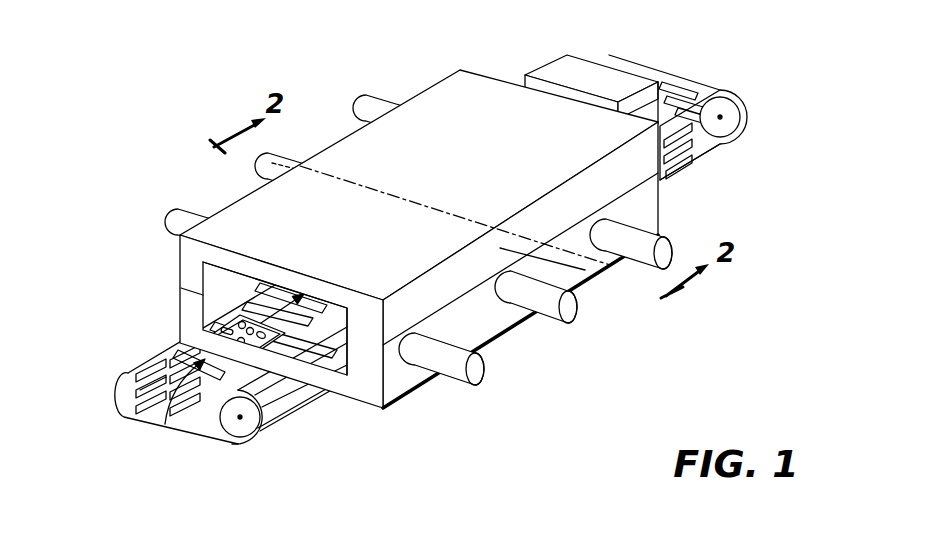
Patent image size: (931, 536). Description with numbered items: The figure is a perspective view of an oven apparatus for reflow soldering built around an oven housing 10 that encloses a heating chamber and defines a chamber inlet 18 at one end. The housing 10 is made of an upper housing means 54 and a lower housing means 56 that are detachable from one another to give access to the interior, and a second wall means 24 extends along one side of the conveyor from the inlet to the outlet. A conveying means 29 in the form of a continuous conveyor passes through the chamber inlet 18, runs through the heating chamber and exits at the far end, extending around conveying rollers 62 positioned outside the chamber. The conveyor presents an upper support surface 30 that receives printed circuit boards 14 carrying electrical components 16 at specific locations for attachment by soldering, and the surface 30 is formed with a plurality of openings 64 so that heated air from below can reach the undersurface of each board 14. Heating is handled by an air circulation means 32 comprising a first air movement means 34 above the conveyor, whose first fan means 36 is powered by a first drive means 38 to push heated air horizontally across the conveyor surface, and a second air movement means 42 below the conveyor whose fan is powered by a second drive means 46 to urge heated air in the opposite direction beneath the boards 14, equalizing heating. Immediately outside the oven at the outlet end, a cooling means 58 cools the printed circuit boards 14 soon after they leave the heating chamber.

The oven housing 10 is at (444, 173).
The printed circuit board 14 is at (253, 349).
The electrical components 16 is at (260, 336).
The chamber inlet 18 is at (337, 348).
The second wall means 24 is at (556, 282).
The conveying means 29 is at (678, 160).
The upper support surface 30 is at (153, 360).
The air circulation means 32 is at (188, 300).
The first air movement means 34 is at (257, 168).
The first fan means 36 is at (167, 222).
The first drive means 38 is at (378, 101).
The second air movement means 42 is at (443, 368).
The second drive means 46 is at (540, 312).
The upper housing means 54 is at (445, 287).
The lower housing means 56 is at (459, 329).
The cooling means 58 is at (592, 75).
The conveying rollers 62 is at (244, 440).
The openings 64 is at (148, 410).